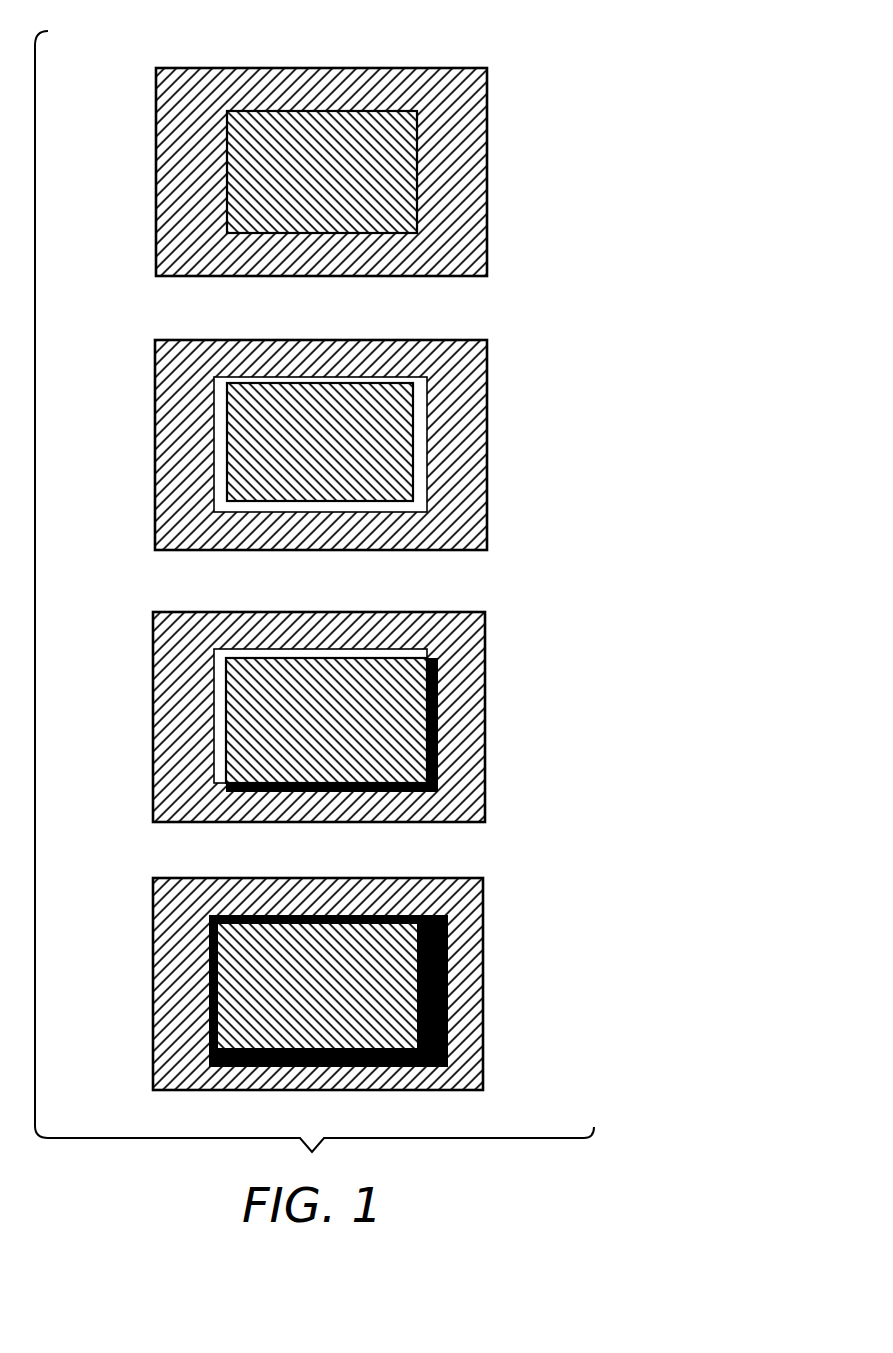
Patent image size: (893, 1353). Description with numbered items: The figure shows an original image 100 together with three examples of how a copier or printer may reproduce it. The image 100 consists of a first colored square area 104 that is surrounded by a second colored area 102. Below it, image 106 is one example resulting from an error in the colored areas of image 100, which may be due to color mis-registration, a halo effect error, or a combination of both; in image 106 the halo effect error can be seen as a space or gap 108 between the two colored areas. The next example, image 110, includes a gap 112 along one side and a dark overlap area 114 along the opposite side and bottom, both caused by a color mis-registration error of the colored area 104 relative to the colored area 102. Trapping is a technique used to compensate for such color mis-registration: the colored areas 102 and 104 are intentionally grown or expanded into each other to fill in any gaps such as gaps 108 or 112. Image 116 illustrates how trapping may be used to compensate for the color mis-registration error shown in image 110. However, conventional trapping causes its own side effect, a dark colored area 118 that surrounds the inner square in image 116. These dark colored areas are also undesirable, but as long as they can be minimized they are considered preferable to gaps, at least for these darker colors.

The image 100 is at (316, 172).
The second colored area 102 is at (470, 95).
The first colored square area 104 is at (400, 160).
The image 106 is at (305, 445).
The gap 108 is at (413, 446).
The image 110 is at (309, 694).
The gap 112 is at (376, 660).
The dark overlap area 114 is at (438, 772).
The image 116 is at (312, 984).
The dark colored area 118 is at (448, 952).